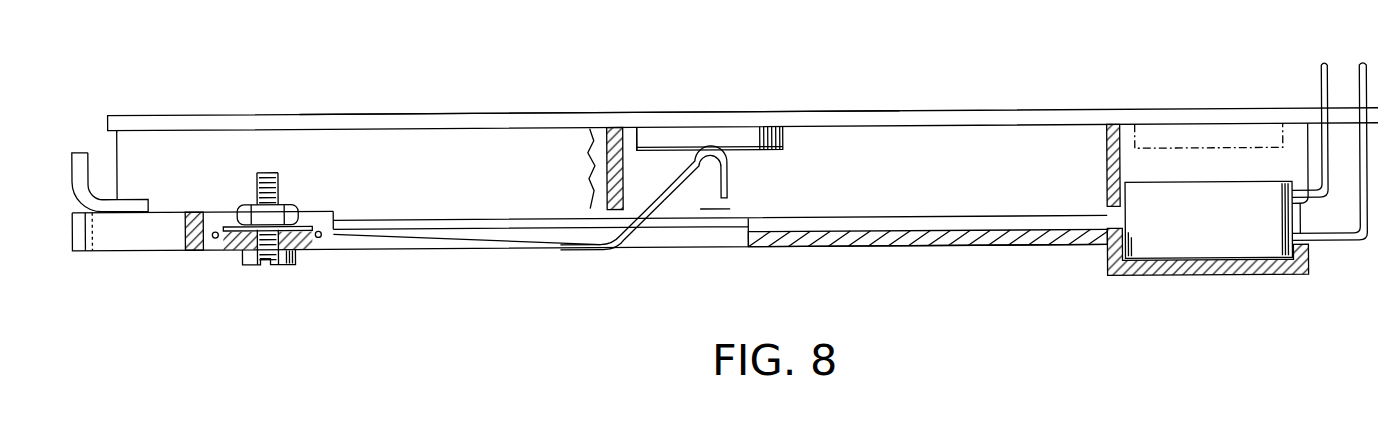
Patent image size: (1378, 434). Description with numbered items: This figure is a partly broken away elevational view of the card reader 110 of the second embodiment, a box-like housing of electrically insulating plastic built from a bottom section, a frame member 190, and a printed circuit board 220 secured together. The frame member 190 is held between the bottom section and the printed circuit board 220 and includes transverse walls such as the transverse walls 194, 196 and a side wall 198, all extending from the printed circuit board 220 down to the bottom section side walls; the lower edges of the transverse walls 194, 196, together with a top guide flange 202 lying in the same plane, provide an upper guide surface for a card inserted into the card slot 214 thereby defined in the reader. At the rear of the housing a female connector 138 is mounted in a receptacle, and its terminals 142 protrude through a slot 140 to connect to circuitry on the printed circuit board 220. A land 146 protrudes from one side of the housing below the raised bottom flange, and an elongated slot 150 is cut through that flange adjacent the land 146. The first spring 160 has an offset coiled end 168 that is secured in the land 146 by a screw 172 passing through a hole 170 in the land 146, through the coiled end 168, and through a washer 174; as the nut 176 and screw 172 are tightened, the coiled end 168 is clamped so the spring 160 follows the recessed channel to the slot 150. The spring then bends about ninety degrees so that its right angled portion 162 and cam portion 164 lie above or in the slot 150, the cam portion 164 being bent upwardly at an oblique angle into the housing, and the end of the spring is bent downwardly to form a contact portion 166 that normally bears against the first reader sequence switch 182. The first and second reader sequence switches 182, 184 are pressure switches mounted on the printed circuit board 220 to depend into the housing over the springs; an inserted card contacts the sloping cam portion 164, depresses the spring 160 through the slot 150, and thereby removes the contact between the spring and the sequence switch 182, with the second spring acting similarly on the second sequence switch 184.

The card reader 110 is at (1010, 92).
The female connector 138 is at (1208, 219).
The slot 140 is at (1333, 181).
The terminals 142 is at (1360, 91).
The land 146 is at (192, 233).
The elongated slot 150 is at (752, 224).
The first spring 160 is at (598, 252).
The right angled portion 162 is at (436, 236).
The cam portion 164 is at (668, 190).
The contact portion 166 is at (705, 155).
The offset coiled end 168 is at (210, 236).
The hole 170 is at (252, 257).
The screw 172 is at (296, 258).
The washer 174 is at (298, 212).
The nut 176 is at (242, 203).
The first reader sequence switch 182 is at (783, 139).
The second reader sequence switch 184 is at (1209, 152).
The frame member 190 is at (102, 145).
The transverse wall 194 is at (631, 134).
The transverse wall 196 is at (1107, 153).
The side wall 198 is at (180, 148).
The top guide flange 202 is at (370, 209).
The card slot 214 is at (712, 214).
The printed circuit board 220 is at (833, 111).